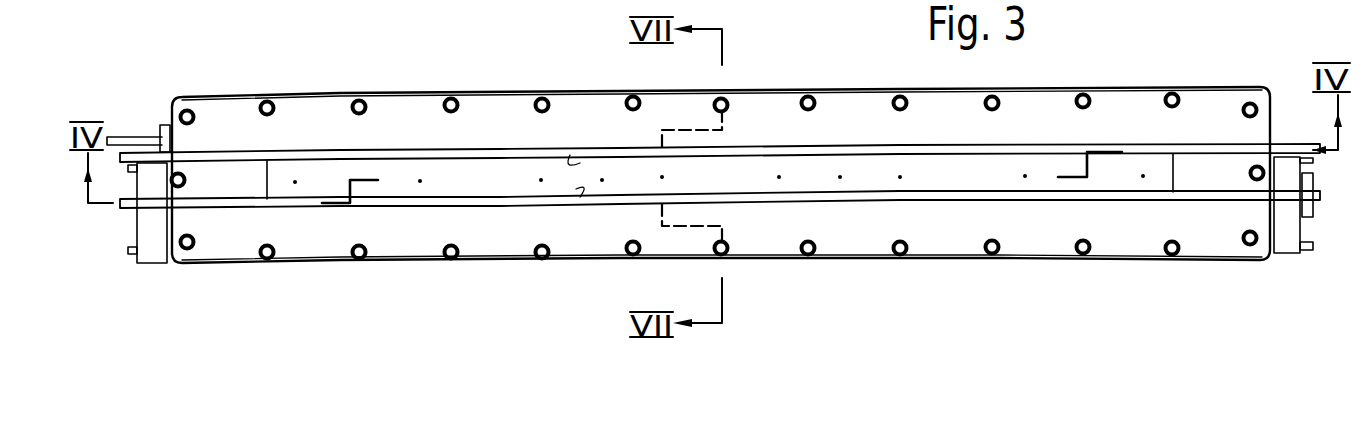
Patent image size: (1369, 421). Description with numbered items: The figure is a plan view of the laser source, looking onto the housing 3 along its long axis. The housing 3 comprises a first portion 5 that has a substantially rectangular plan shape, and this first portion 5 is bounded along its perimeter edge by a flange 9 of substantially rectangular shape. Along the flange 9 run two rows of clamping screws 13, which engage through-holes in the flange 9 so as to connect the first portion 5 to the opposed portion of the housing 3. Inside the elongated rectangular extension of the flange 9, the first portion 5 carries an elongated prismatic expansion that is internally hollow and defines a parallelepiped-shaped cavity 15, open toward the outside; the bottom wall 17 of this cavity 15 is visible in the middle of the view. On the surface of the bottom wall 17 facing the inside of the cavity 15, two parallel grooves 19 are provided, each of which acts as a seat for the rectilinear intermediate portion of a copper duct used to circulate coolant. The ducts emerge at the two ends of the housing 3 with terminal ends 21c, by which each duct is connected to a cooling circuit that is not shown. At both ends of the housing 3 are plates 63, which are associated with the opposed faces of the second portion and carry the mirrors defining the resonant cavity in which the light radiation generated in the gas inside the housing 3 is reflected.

The housing 3 is at (300, 97).
The first portion 5 is at (842, 131).
The flange 9 is at (770, 108).
The clamping screws 13 is at (545, 97).
The cavity 15 is at (570, 155).
The bottom wall 17 is at (884, 188).
The grooves 19 is at (460, 148).
The terminal ends 21c is at (143, 155).
The plates 63 is at (150, 228).